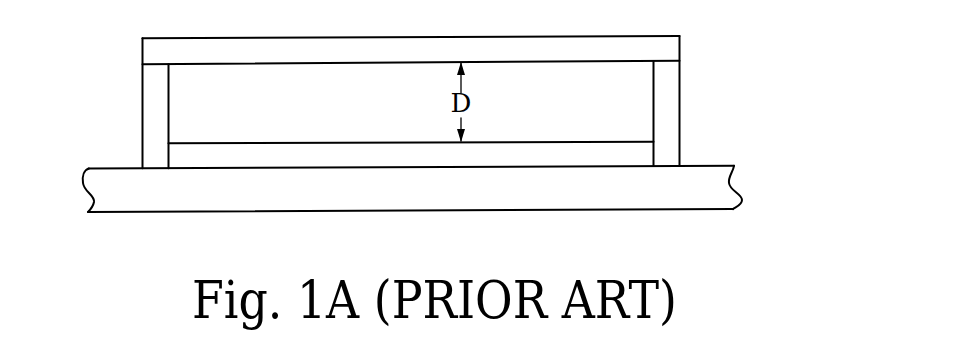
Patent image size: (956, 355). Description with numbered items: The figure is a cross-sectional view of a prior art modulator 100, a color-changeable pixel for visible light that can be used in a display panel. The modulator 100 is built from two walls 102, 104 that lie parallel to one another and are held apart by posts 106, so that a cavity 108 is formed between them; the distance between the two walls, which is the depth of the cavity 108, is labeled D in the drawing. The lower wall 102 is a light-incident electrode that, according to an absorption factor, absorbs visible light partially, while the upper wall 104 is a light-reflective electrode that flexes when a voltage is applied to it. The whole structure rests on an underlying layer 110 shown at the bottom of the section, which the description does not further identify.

The modulator 100 is at (446, 100).
The wall 102 is at (642, 153).
The wall 104 is at (663, 51).
The posts 106 is at (146, 107).
The cavity 108 is at (643, 106).
The substrate 110 is at (683, 190).